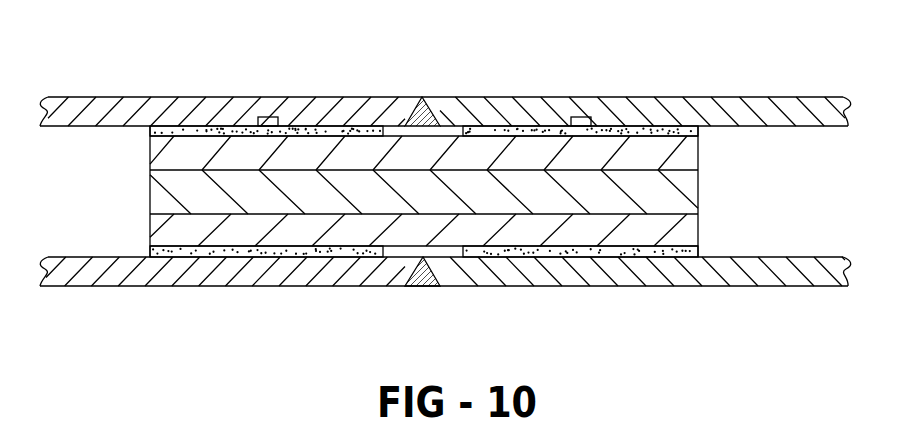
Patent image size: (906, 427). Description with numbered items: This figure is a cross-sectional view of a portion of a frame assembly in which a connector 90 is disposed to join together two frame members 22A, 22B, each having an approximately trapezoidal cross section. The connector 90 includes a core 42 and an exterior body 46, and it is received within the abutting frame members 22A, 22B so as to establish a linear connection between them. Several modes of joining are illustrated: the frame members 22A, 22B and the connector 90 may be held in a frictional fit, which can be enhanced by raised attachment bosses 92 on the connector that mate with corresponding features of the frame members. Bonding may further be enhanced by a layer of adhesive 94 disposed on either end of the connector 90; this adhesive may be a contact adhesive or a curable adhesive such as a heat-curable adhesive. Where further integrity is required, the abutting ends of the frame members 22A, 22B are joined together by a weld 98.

The frame member 22A is at (212, 110).
The frame member 22B is at (674, 105).
The core 42 is at (187, 185).
The exterior body 46 is at (236, 228).
The connector 90 is at (428, 153).
The attachment boss 92 is at (270, 117).
The layer of adhesive 94 is at (172, 128).
The weld 98 is at (424, 287).